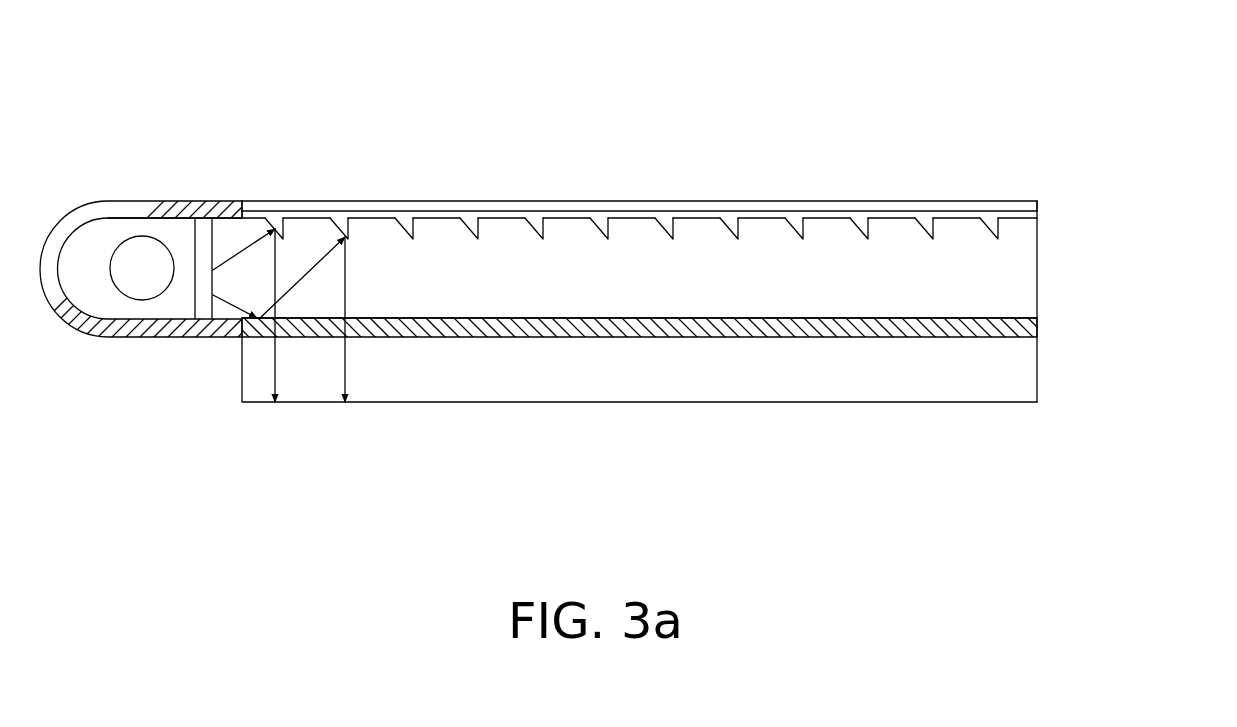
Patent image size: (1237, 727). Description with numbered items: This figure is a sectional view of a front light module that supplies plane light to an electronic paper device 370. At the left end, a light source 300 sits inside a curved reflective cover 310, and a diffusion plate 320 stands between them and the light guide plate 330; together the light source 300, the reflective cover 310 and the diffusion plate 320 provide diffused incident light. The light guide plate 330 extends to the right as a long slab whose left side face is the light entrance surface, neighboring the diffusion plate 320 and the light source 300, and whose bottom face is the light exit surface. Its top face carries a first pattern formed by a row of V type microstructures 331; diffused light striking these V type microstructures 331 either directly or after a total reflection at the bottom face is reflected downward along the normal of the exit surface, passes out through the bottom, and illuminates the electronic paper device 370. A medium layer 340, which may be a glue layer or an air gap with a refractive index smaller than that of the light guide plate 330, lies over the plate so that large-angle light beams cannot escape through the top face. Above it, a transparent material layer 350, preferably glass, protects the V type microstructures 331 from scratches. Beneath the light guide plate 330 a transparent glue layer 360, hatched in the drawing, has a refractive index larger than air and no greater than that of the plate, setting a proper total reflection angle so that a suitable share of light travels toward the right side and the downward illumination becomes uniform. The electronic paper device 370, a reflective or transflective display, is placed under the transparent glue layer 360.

The light source 300 is at (128, 287).
The reflective cover 310 is at (73, 212).
The diffusion plate 320 is at (205, 235).
The light guide plate 330 is at (1018, 277).
The V type microstructures 331 is at (408, 222).
The medium layer 340 is at (1028, 214).
The transparent material layer 350 is at (593, 207).
The transparent glue layer 360 is at (1020, 323).
The electronic paper device 370 is at (1007, 372).